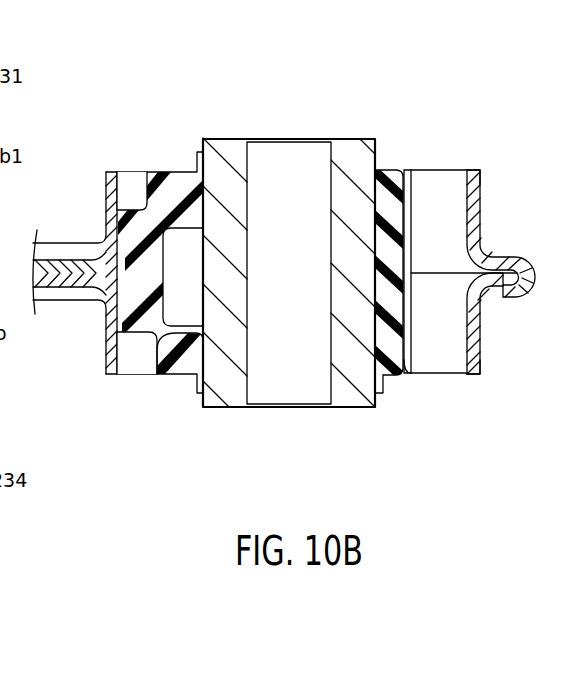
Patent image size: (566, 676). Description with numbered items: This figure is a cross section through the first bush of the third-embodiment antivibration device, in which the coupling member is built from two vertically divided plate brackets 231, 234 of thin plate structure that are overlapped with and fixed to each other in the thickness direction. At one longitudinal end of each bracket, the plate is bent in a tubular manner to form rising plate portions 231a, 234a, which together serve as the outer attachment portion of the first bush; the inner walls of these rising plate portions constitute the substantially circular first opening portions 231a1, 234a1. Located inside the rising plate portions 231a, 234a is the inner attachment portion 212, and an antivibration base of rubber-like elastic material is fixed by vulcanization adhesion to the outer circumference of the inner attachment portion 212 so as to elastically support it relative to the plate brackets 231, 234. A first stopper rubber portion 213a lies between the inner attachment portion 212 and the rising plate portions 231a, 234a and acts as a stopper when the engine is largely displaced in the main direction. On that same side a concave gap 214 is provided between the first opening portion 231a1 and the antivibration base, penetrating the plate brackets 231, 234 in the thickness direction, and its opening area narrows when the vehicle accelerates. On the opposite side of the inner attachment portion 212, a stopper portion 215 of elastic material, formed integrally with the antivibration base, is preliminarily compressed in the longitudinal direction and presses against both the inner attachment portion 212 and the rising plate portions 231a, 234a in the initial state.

The inner attachment portion 212 is at (347, 144).
The first stopper rubber portion 213a is at (407, 195).
The gap 214 is at (404, 371).
The stopper portion 215 is at (145, 207).
The plate bracket 231 is at (509, 164).
The rising plate portion 231a is at (481, 205).
The first opening portion 231a1 is at (462, 178).
The plate bracket 234 is at (512, 393).
The rising plate portion 234a is at (481, 333).
The first opening portion 234a1 is at (465, 373).